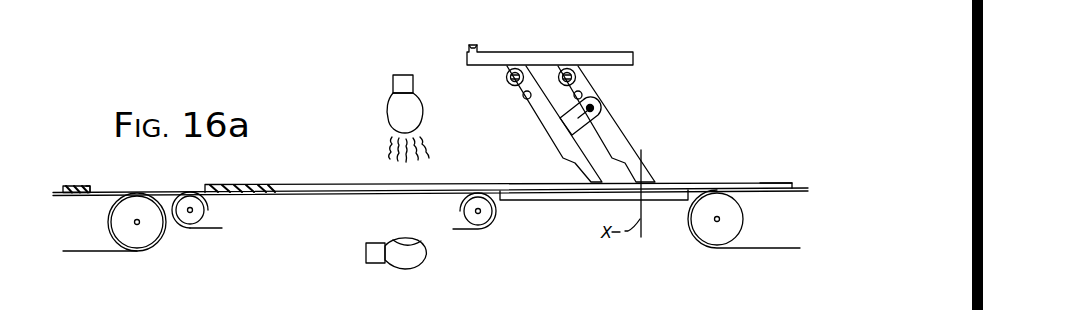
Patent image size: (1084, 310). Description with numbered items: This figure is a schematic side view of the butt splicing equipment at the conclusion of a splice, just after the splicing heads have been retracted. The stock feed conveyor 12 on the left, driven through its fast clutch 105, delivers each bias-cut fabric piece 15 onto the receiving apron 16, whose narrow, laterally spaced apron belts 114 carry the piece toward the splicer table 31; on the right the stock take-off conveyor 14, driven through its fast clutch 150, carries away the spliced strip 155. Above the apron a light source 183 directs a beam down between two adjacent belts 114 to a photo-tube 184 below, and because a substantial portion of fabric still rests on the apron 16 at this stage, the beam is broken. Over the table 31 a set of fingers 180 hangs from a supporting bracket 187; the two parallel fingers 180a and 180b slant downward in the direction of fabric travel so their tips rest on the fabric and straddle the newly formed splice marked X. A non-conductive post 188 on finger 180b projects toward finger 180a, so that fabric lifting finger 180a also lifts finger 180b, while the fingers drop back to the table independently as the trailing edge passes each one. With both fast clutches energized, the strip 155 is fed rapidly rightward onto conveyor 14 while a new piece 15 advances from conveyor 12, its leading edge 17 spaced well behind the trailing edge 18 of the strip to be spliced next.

The stock feed conveyor 12 is at (86, 242).
The stock take-off conveyor 14 is at (771, 238).
The fabric piece 15 is at (74, 186).
The receiving apron 16 is at (185, 183).
The leading edge 17 is at (112, 172).
The trailing edge 18 is at (215, 185).
The splicer table 31 is at (567, 196).
The fast clutch 105 is at (137, 238).
The apron belts 114 is at (220, 227).
The fast clutch 150 is at (720, 233).
The spliced strip of fabric 155 is at (722, 183).
The fingers 180 is at (545, 98).
The finger 180a is at (542, 118).
The finger 180b is at (616, 140).
The light source 183 is at (390, 109).
The photo-tube 184 is at (396, 240).
The supporting bracket 187 is at (467, 50).
The post 188 is at (573, 124).